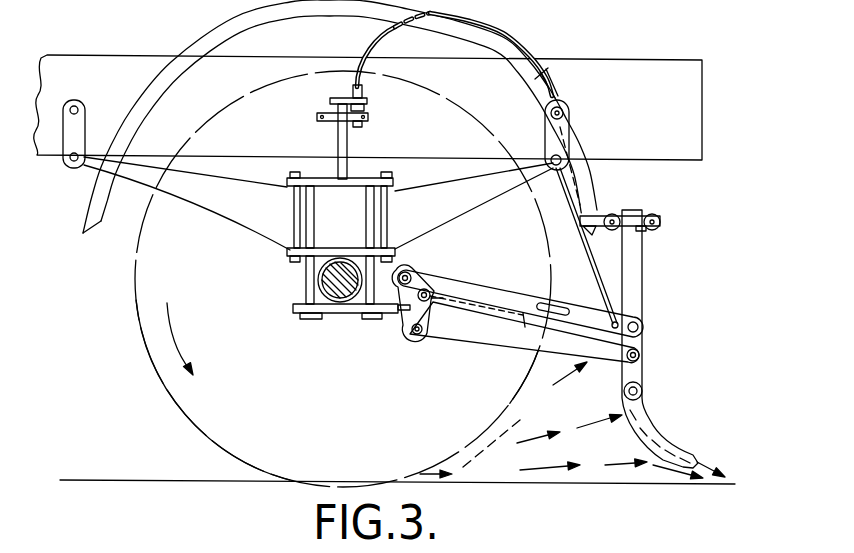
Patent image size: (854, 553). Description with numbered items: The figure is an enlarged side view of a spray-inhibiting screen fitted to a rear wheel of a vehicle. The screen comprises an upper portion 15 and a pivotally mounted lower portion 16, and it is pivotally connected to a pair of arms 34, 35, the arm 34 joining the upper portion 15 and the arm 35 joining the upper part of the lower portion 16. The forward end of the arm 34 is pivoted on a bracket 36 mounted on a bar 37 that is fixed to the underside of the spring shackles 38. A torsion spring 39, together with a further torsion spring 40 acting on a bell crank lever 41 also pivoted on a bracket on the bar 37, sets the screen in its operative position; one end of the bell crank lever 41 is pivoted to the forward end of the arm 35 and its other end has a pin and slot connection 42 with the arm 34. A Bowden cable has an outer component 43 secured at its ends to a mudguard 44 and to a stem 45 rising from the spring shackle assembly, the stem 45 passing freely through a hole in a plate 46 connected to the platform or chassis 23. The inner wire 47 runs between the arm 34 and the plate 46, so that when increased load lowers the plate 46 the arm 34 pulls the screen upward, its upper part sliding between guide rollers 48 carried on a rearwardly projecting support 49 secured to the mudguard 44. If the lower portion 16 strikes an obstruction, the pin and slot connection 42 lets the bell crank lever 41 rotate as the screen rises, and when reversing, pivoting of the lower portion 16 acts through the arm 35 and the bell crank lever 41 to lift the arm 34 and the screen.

The upper portion 15 is at (630, 294).
The lower portion 16 is at (662, 440).
The platform or chassis 23 is at (122, 82).
The arm 34 is at (640, 355).
The arm 35 is at (497, 340).
The bracket 36 is at (406, 296).
The bar 37 is at (340, 320).
The spring shackles 38 is at (370, 243).
The torsion spring 39 is at (413, 277).
The further torsion spring 40 is at (437, 302).
The bell crank lever 41 is at (485, 300).
The pin and slot connection 42 is at (553, 304).
The outer component 43 is at (493, 31).
The mudguard 44 is at (503, 55).
The stem 45 is at (343, 147).
The plate 46 is at (327, 118).
The inner wire 47 is at (601, 262).
The guide rollers 48 is at (608, 216).
The rearwardly projecting support 49 is at (641, 229).